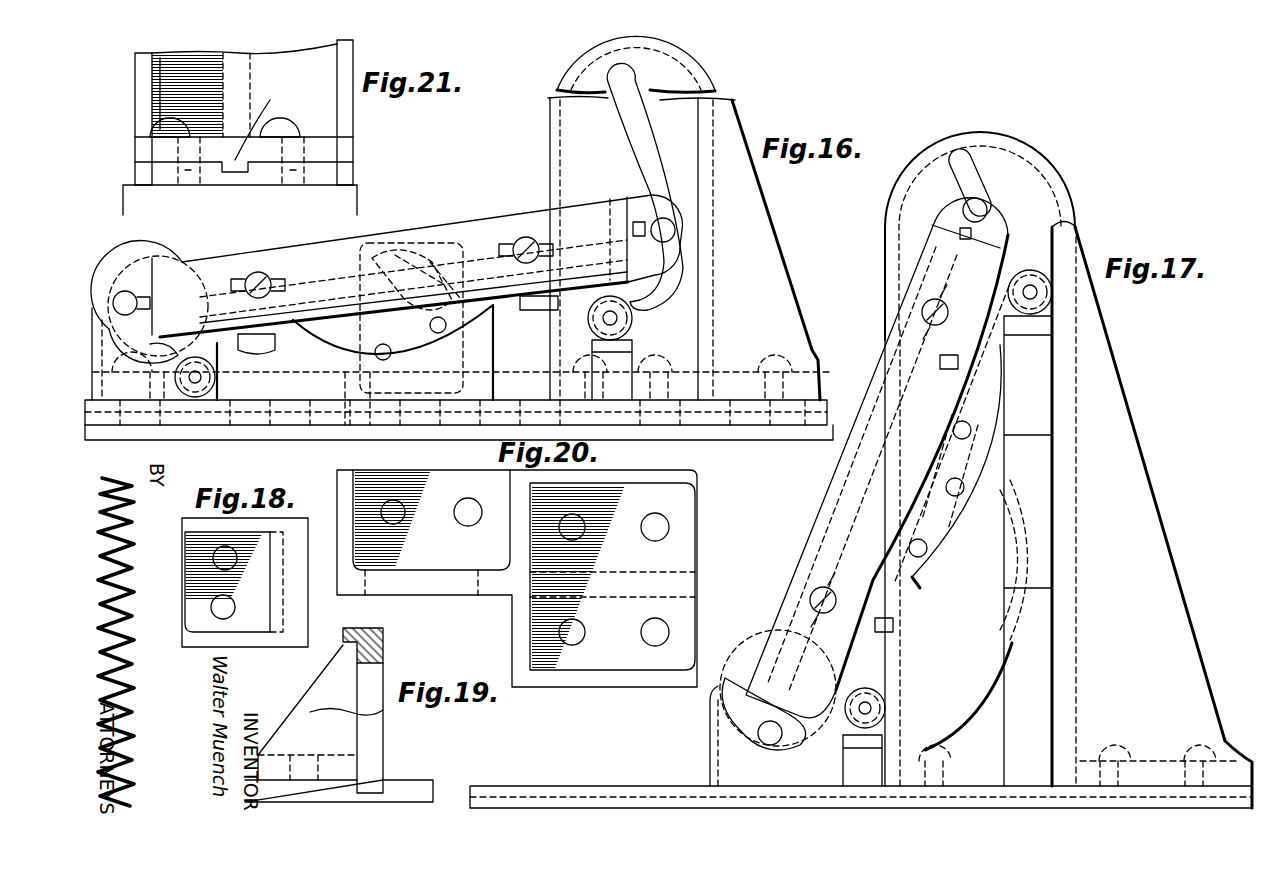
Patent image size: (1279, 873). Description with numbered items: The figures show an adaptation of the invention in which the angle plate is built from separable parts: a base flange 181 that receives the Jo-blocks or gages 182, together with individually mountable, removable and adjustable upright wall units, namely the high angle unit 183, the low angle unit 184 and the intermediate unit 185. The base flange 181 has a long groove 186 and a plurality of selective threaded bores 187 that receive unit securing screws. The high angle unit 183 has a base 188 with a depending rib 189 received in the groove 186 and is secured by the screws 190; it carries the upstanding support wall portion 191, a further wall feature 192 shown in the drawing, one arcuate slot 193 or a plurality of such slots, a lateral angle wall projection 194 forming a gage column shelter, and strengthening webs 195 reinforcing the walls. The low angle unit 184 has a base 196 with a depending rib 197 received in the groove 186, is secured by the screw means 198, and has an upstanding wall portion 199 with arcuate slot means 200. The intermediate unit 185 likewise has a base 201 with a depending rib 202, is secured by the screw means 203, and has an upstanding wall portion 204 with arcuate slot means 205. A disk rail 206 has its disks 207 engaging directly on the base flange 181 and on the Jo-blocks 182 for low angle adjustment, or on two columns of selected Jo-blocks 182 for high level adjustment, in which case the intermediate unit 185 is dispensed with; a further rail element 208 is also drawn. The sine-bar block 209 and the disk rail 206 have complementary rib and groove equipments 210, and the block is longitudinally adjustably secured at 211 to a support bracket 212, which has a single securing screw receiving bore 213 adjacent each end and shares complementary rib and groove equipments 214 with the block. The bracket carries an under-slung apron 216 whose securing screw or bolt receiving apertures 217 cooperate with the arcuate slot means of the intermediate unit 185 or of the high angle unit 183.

In FIG. 16, the base flange 181 is at (320, 430).
In FIG. 19, the base flange 181 is at (414, 780).
In FIG. 17, the base flange 181 is at (640, 786).
In FIG. 16, the Jo-blocks or gages 182 is at (625, 360).
In FIG. 17, the Jo-blocks or gages 182 is at (1030, 350).
In FIG. 16, the high angle unit 183 is at (705, 84).
In FIG. 20, the high angle unit 183 is at (500, 597).
In FIG. 17, the high angle unit 183 is at (1028, 146).
In FIG. 16, the low angle unit 184 is at (196, 258).
In FIG. 20, the low angle unit 184 is at (392, 598).
In FIG. 18, the low angle unit 184 is at (305, 648).
In FIG. 19, the low angle unit 184 is at (376, 630).
In FIG. 17, the low angle unit 184 is at (760, 620).
In FIG. 16, the intermediate unit 185 is at (403, 240).
In FIG. 21, the long groove 186 is at (241, 184).
In FIG. 16, the long groove 186 is at (728, 430).
In FIG. 19, the long groove 186 is at (386, 785).
In FIG. 17, the long groove 186 is at (565, 786).
In FIG. 21, the threaded bores 187 is at (312, 172).
In FIG. 16, the threaded bores 187 is at (500, 432).
In FIG. 17, the threaded bores 187 is at (1155, 762).
In FIG. 21, the base 188 is at (340, 150).
In FIG. 16, the base 188 is at (695, 380).
In FIG. 20, the base 188 is at (425, 490).
In FIG. 17, the base 188 is at (1180, 736).
In FIG. 21, the depending rib 189 is at (264, 123).
In FIG. 16, the depending rib 189 is at (545, 398).
In FIG. 20, the depending rib 189 is at (660, 576).
In FIG. 17, the depending rib 189 is at (905, 775).
In FIG. 21, the screws 190 is at (160, 131).
In FIG. 16, the screws 190 is at (772, 350).
In FIG. 17, the screws 190 is at (880, 340).
In FIG. 21, the upstanding support wall portion 191 is at (160, 76).
In FIG. 16, the upstanding support wall portion 191 is at (552, 147).
In FIG. 20, the upstanding support wall portion 191 is at (440, 573).
In FIG. 17, the upstanding support wall portion 191 is at (1062, 201).
In FIG. 16, the hook 192 is at (640, 162).
In FIG. 20, the hook 192 is at (480, 585).
In FIG. 17, the arcuate slot 193 is at (978, 170).
In FIG. 21, the lateral angle wall projection 194 is at (215, 70).
In FIG. 16, the lateral angle wall projection 194 is at (706, 311).
In FIG. 20, the lateral angle wall projection 194 is at (520, 687).
In FIG. 17, the lateral angle wall projection 194 is at (1068, 416).
In FIG. 21, the strengthening webs 195 is at (138, 56).
In FIG. 16, the strengthening webs 195 is at (556, 176).
In FIG. 17, the strengthening webs 195 is at (905, 275).
In FIG. 18, the base 196 is at (186, 576).
In FIG. 19, the base 196 is at (296, 715).
In FIG. 17, the base 196 is at (720, 762).
In FIG. 16, the depending rib 197 is at (93, 426).
In FIG. 19, the depending rib 197 is at (357, 755).
In FIG. 16, the screw means 198 is at (147, 426).
In FIG. 18, the upstanding wall portion 199 is at (298, 610).
In FIG. 19, the upstanding wall portion 199 is at (383, 650).
In FIG. 17, the upstanding wall portion 199 is at (745, 648).
In FIG. 16, the arcuate slot means 200 is at (160, 252).
In FIG. 18, the arcuate slot means 200 is at (290, 548).
In FIG. 19, the arcuate slot means 200 is at (365, 672).
In FIG. 17, the arcuate slot means 200 is at (718, 700).
In FIG. 16, the base 201 is at (470, 362).
In FIG. 16, the depending rib 202 is at (352, 428).
In FIG. 16, the screw means 203 is at (360, 390).
In FIG. 16, the upstanding wall portion 204 is at (440, 250).
In FIG. 16, the arcuate slot means 205 is at (455, 249).
In FIG. 16, the disk rail 206 is at (330, 338).
In FIG. 17, the disk rail 206 is at (895, 590).
In FIG. 16, the disks 207 is at (216, 382).
In FIG. 17, the disks 207 is at (1030, 268).
In FIG. 16, the block 208 is at (248, 352).
In FIG. 17, the block 208 is at (1000, 362).
In FIG. 16, the sine-bar block 209 is at (335, 245).
In FIG. 17, the sine-bar block 209 is at (865, 360).
In FIG. 16, the rib and groove equipments 210 is at (345, 305).
In FIG. 17, the rib and groove equipments 210 is at (868, 549).
In FIG. 16, the securing means 211 is at (258, 272).
In FIG. 17, the securing means 211 is at (920, 310).
In FIG. 16, the support bracket 212 is at (668, 222).
In FIG. 17, the support bracket 212 is at (1002, 203).
In FIG. 16, the securing screw receiving bore 213 is at (716, 245).
In FIG. 17, the securing screw receiving bore 213 is at (940, 218).
In FIG. 16, the rib and groove equipments 214 is at (614, 238).
In FIG. 17, the rib and groove equipments 214 is at (930, 250).
In FIG. 16, the under-slung apron 216 is at (315, 366).
In FIG. 17, the under-slung apron 216 is at (920, 568).
In FIG. 16, the securing screw receiving apertures 217 is at (428, 326).
In FIG. 17, the securing screw receiving apertures 217 is at (965, 480).